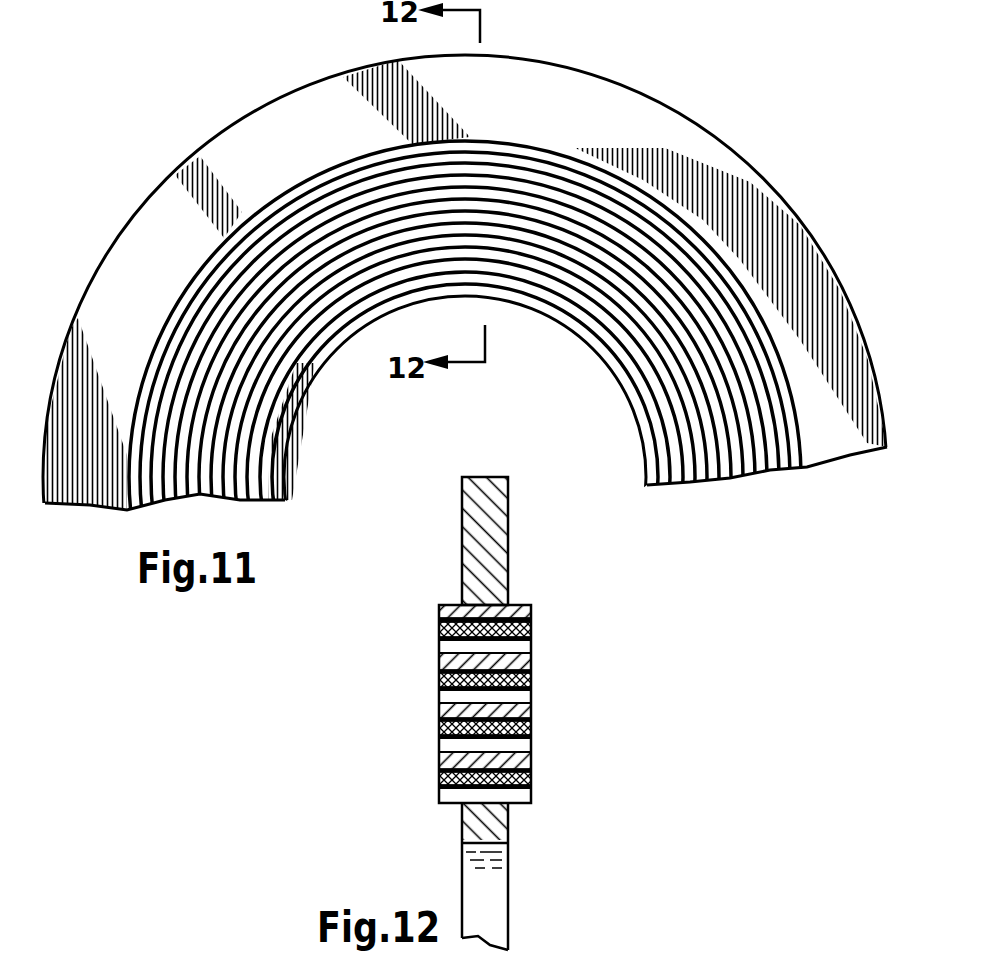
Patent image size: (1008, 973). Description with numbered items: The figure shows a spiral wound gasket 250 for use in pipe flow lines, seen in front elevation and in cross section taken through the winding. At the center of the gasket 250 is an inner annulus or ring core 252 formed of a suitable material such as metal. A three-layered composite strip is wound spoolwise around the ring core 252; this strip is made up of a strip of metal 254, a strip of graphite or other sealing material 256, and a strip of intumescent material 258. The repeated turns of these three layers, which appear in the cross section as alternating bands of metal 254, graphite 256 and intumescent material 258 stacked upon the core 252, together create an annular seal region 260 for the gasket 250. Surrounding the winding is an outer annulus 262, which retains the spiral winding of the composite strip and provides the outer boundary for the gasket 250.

In FIG. 11, the gasket 250 is at (465, 465).
In FIG. 11, the ring core 252 is at (632, 376).
In FIG. 12, the ring core 252 is at (492, 907).
In FIG. 11, the strip of metal 254 is at (575, 163).
In FIG. 12, the strip of metal 254 is at (530, 607).
In FIG. 11, the strip of graphite 256 is at (623, 238).
In FIG. 12, the strip of graphite 256 is at (530, 648).
In FIG. 11, the strip of intumescent material 258 is at (613, 210).
In FIG. 12, the strip of intumescent material 258 is at (440, 627).
In FIG. 11, the annular seal region 260 is at (643, 222).
In FIG. 11, the outer annulus 262 is at (568, 85).